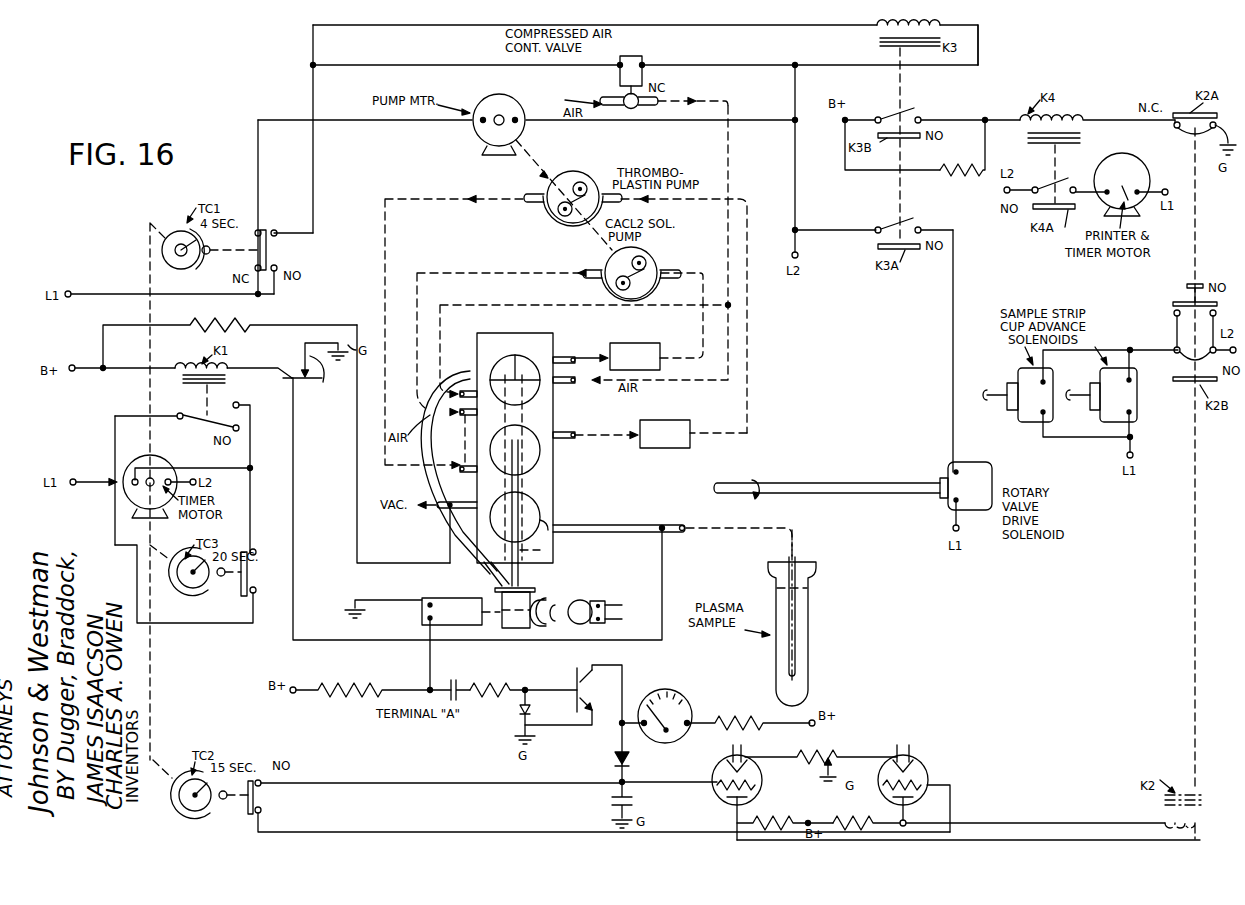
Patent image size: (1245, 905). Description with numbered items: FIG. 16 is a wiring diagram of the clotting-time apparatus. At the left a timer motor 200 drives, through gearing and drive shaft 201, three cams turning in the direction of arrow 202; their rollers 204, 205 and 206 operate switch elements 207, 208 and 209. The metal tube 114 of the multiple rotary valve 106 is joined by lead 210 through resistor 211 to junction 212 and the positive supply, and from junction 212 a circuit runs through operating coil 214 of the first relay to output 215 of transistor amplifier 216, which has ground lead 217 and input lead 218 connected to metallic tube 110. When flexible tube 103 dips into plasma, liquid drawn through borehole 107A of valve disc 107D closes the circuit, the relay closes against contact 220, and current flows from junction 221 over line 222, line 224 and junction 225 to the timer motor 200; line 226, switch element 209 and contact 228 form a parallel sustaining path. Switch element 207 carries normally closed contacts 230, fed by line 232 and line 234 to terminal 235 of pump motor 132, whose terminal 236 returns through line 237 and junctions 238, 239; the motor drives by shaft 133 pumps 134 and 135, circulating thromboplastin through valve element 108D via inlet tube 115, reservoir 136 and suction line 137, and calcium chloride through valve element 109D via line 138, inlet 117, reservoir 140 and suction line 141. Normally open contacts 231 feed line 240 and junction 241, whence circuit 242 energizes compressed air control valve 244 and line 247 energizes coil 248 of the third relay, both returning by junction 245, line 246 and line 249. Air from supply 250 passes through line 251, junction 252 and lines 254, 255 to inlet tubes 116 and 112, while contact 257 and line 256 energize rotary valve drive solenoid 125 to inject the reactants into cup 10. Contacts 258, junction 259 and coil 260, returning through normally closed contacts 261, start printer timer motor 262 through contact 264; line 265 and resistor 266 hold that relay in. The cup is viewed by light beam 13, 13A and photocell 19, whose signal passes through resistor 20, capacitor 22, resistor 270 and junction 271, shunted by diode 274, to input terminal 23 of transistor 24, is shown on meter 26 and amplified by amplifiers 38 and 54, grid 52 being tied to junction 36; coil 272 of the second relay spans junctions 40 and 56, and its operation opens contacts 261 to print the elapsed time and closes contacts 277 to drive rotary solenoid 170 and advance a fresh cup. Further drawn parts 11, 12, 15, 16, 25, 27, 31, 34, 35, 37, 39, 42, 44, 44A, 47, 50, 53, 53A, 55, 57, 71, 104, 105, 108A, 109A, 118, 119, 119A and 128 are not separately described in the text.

The cup 10 is at (520, 630).
The lamp 11 is at (596, 598).
The lens 12 is at (557, 604).
The light beam 13 is at (545, 626).
The light beam 13A is at (488, 618).
The tube 15 is at (522, 578).
The tube 16 is at (494, 575).
The photocell 19 is at (425, 595).
The resistor 20 is at (330, 698).
The capacitor 22 is at (445, 685).
The input terminal 23 is at (570, 684).
The transistor 24 is at (583, 688).
The collector lead 25 is at (605, 665).
The meter 26 is at (690, 690).
The resistor 27 is at (750, 710).
The emitter lead 31 is at (594, 714).
The junction 34 is at (618, 728).
The diode 35 is at (630, 760).
The junction 36 is at (618, 785).
The cathode 37 is at (725, 798).
The amplifier 38 is at (713, 777).
The cathode lead 39 is at (728, 800).
The junction 40 is at (735, 826).
The lead 42 is at (790, 815).
The grid 44 is at (758, 784).
The plate lead 44A is at (748, 758).
The wiper 47 is at (836, 768).
The capacitor 50 is at (632, 800).
The grid 52 is at (948, 788).
The tube 53 is at (925, 775).
The plate 53A is at (913, 762).
The amplifier 54 is at (928, 768).
The cathode 55 is at (910, 798).
The junction 56 is at (875, 812).
The junction 57 is at (806, 822).
The potentiometer 71 is at (830, 745).
The flexible tube 103 is at (800, 612).
The push button switch 104 is at (1188, 286).
The photoelectric cell 105 is at (485, 596).
The multiple rotary valve 106 is at (548, 342).
The borehole 107A is at (548, 500).
The valve disc 107D is at (552, 518).
The valve 108A is at (535, 474).
The valve element 108D is at (558, 437).
The valve 109A is at (515, 371).
The valve element 109D is at (548, 392).
The metallic tube 110 is at (612, 525).
The inlet tube 112 is at (572, 378).
The metal tube 114 is at (443, 510).
The inlet tube 115 is at (462, 466).
The inlet tube 116 is at (388, 233).
The inlet 117 is at (463, 391).
The tube 118 is at (418, 414).
The passage 119 is at (548, 552).
The passage 119A is at (512, 488).
The rotary valve drive solenoid 125 is at (953, 510).
The rod 128 is at (828, 490).
The pump motor 132 is at (506, 100).
The shaft 133 is at (541, 155).
The fluid pump 134 is at (612, 172).
The fluid pump 135 is at (653, 258).
The reservoir 136 is at (655, 420).
The suction line 137 is at (750, 375).
The line 138 is at (480, 275).
The reservoir 140 is at (630, 342).
The suction line 141 is at (700, 346).
The rotary solenoid 170 is at (1132, 405).
The timer motor 200 is at (125, 503).
The gearing and drive shaft 201 is at (150, 632).
The arrow 202 is at (183, 270).
The operator roller 204 is at (210, 246).
The operator roller 205 is at (262, 785).
The operator roller 206 is at (224, 580).
The switch element 207 is at (266, 228).
The switch element 208 is at (250, 812).
The switch element 209 is at (248, 574).
The lead 210 is at (426, 547).
The resistor 211 is at (240, 322).
The junction 212 is at (103, 371).
The operating coil 214 is at (180, 362).
The output 215 is at (280, 360).
The transistor amplifier 216 is at (280, 378).
The ground lead 217 is at (320, 382).
The input lead 218 is at (662, 585).
The contact 220 is at (230, 405).
The junction 221 is at (115, 477).
The line 222 is at (138, 410).
The line 224 is at (253, 460).
The junction 225 is at (252, 470).
The line 226 is at (112, 545).
The contact 228 is at (255, 554).
The normally closed contacts 230 is at (255, 268).
The normally open contacts 231 is at (277, 265).
The line 232 is at (104, 284).
The line 234 is at (328, 121).
The terminal 235 is at (481, 122).
The terminal 236 is at (517, 122).
The line 237 is at (628, 121).
The junction 238 is at (794, 121).
The junction 239 is at (793, 230).
The line 240 is at (313, 232).
The junction 241 is at (311, 65).
The circuit 242 is at (372, 65).
The compressed air control valve 244 is at (642, 60).
The junction 245 is at (794, 63).
The line 246 is at (794, 104).
The line 247 is at (450, 26).
The coil 248 is at (876, 30).
The line 249 is at (980, 50).
The compressed air supply 250 is at (596, 97).
The line 251 is at (698, 100).
The junction 252 is at (732, 305).
The line 254 is at (525, 300).
The line 255 is at (733, 352).
The line 256 is at (951, 333).
The contact 257 is at (888, 212).
The contacts 258 is at (910, 104).
The junction 259 is at (983, 118).
The coil 260 is at (1080, 110).
The normally closed contacts 261 is at (1035, 416).
The printer timer motor 262 is at (1130, 165).
The contact 264 is at (1060, 175).
The line 265 is at (862, 172).
The resistor 266 is at (945, 170).
The resistor 270 is at (490, 682).
The junction 271 is at (524, 686).
The coil 272 is at (1160, 825).
The diode 274 is at (521, 710).
The contacts 277 is at (1190, 360).